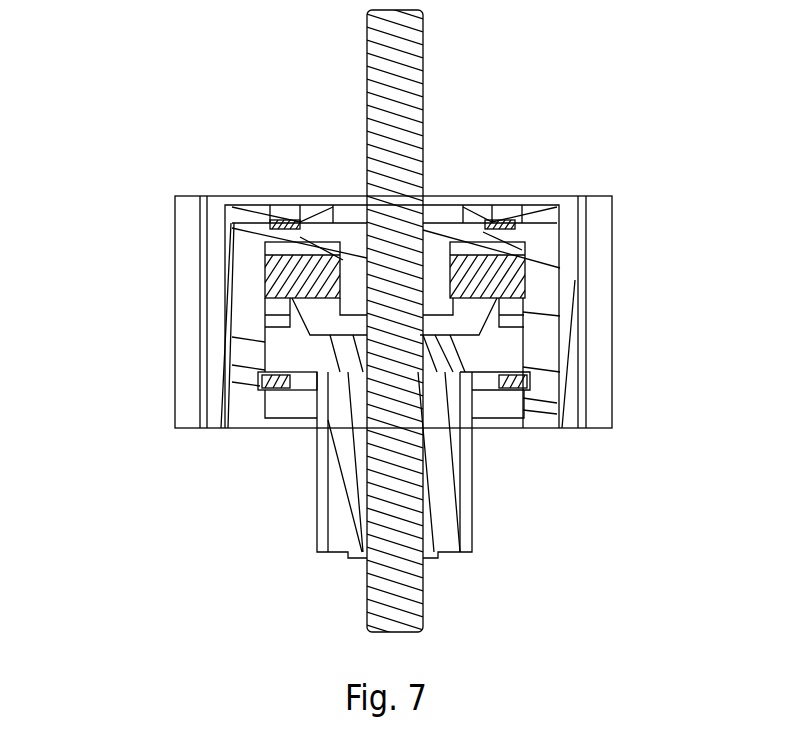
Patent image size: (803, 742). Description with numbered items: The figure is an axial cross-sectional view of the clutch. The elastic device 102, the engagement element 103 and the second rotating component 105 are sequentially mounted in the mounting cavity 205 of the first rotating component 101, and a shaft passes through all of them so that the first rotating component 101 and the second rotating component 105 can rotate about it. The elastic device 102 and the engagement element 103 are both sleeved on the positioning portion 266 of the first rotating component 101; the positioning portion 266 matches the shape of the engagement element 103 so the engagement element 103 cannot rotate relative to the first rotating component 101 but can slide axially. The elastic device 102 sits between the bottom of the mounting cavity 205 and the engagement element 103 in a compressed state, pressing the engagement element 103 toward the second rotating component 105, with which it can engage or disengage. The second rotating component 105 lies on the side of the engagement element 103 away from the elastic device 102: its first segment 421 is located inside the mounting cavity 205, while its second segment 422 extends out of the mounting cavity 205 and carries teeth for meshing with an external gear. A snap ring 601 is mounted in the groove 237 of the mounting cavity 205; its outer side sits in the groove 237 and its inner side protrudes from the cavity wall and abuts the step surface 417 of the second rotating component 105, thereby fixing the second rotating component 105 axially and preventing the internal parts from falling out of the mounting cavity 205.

The first rotating component 101 is at (577, 294).
The elastic device 102 is at (555, 212).
The engagement element 103 is at (265, 270).
The second rotating component 105 is at (438, 496).
The mounting cavity 205 is at (215, 307).
The groove 237 is at (244, 380).
The positioning portion 266 is at (233, 237).
The step surface 417 is at (286, 376).
The first segment 421 is at (510, 343).
The second segment 422 is at (445, 454).
The snap ring 601 is at (260, 383).